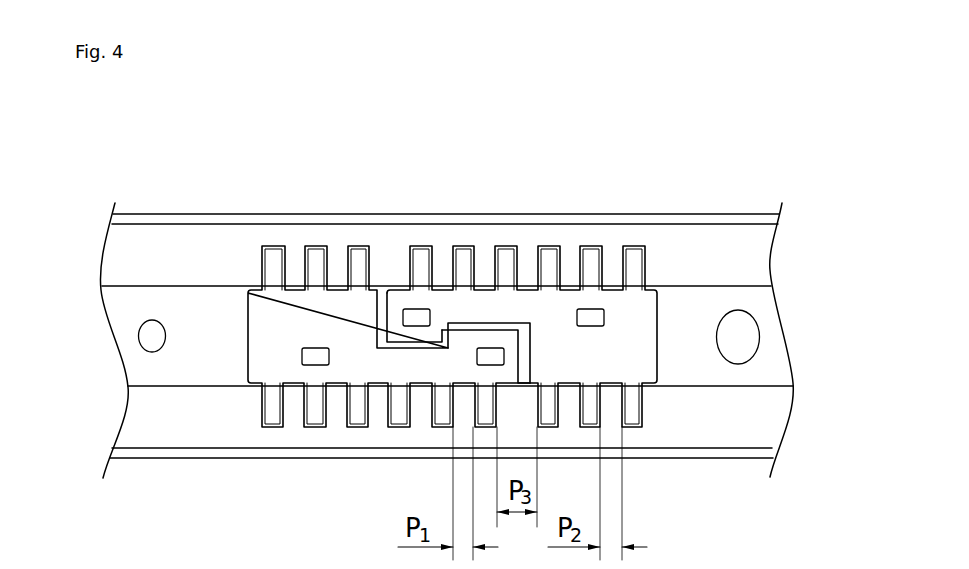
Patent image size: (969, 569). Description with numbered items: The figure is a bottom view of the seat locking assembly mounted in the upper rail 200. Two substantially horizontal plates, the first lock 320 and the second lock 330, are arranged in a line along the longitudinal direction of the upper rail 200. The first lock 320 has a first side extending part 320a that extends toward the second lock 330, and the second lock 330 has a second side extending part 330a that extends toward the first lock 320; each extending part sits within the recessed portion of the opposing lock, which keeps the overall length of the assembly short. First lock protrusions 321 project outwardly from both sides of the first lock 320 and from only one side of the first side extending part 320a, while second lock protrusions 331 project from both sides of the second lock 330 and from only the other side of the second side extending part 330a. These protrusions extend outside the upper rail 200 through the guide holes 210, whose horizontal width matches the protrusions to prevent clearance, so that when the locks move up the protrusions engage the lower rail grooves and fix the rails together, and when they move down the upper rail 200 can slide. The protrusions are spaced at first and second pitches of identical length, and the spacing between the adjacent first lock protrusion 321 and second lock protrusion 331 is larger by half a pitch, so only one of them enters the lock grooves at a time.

The upper rail 200 is at (148, 208).
The guide holes 210 is at (357, 243).
The first lock 320 is at (257, 325).
The first side extending part 320a is at (497, 335).
The first lock protrusions 321 is at (272, 412).
The second lock 330 is at (647, 327).
The second side extending part 330a is at (403, 337).
The second lock protrusions 331 is at (632, 413).